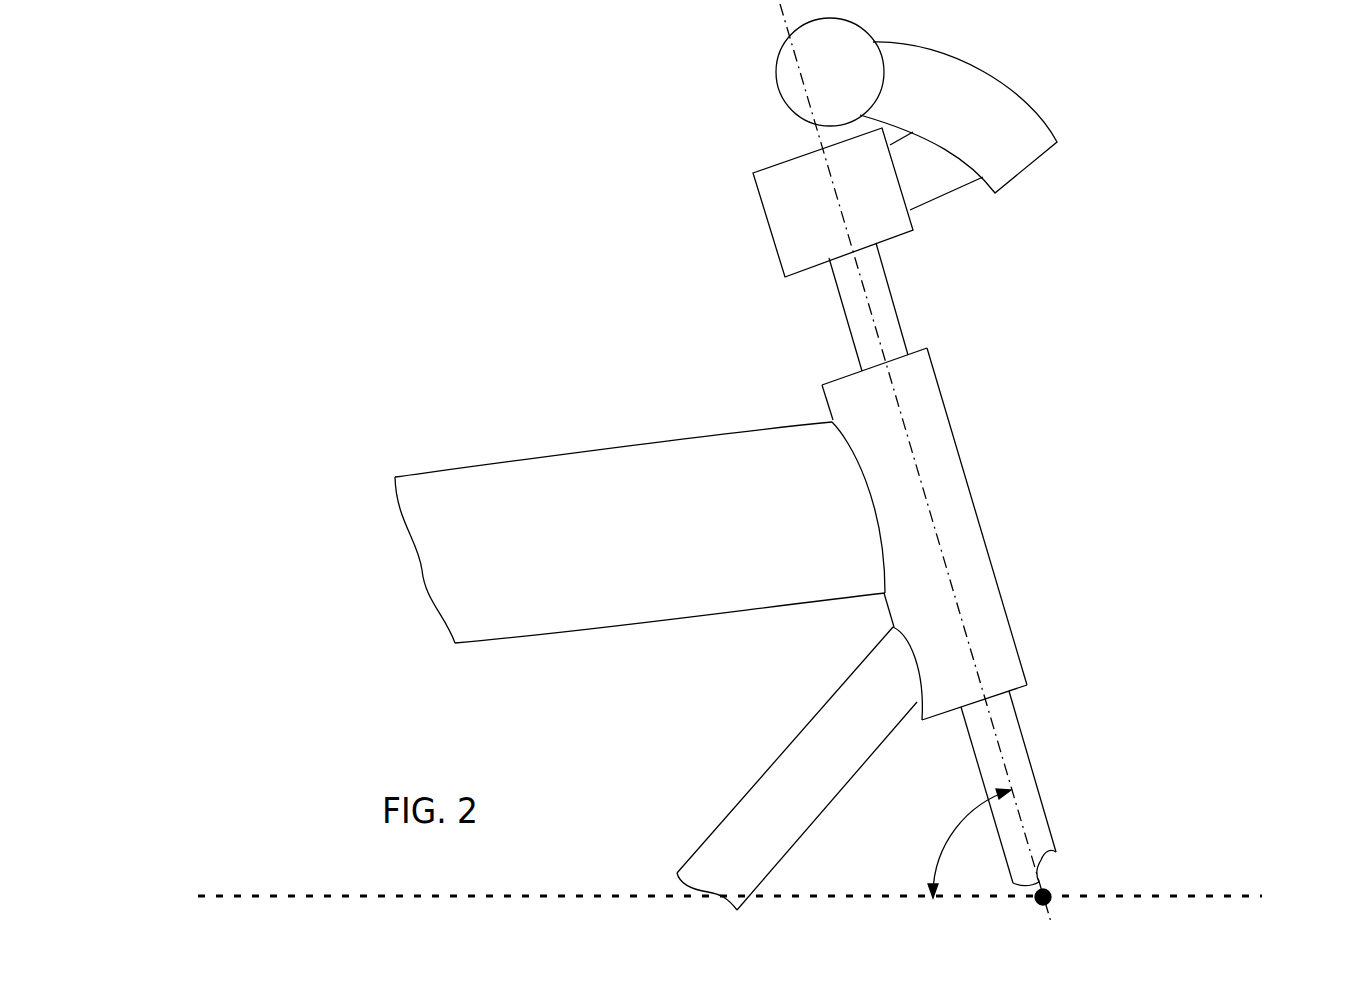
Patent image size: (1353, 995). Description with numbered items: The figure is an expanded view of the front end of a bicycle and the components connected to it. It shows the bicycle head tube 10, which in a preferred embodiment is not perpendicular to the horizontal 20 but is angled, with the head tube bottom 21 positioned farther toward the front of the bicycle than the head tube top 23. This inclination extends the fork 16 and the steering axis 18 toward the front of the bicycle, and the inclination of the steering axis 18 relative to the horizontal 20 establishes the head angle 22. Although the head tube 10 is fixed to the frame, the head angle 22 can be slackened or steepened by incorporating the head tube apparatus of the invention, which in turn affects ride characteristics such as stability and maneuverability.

The head tube 10 is at (972, 508).
The fork 16 is at (1033, 775).
The steering axis 18 is at (787, 30).
The horizontal 20 is at (1257, 897).
The head tube bottom 21 is at (1027, 685).
The head angle 22 is at (957, 826).
The head tube top 23 is at (927, 345).